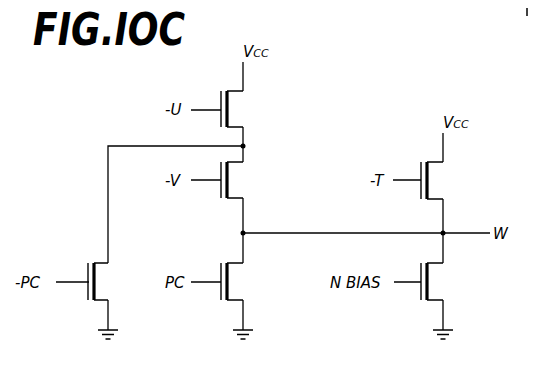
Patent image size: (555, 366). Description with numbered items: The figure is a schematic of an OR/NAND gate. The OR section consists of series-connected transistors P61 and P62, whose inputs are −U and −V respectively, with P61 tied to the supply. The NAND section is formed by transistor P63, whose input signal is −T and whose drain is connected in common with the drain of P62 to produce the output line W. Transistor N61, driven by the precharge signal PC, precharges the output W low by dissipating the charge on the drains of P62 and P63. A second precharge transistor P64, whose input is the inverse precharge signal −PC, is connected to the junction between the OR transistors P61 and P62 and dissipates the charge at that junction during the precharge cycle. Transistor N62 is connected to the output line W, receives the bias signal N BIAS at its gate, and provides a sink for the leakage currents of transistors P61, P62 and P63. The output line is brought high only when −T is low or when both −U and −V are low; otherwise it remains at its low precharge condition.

The OR transistor P61 is at (248, 109).
The OR transistor P62 is at (248, 180).
The NAND section transistor P63 is at (448, 180).
The precharge transistor P64 is at (114, 281).
The precharge transistor N61 is at (249, 281).
The leakage sink transistor N62 is at (449, 281).